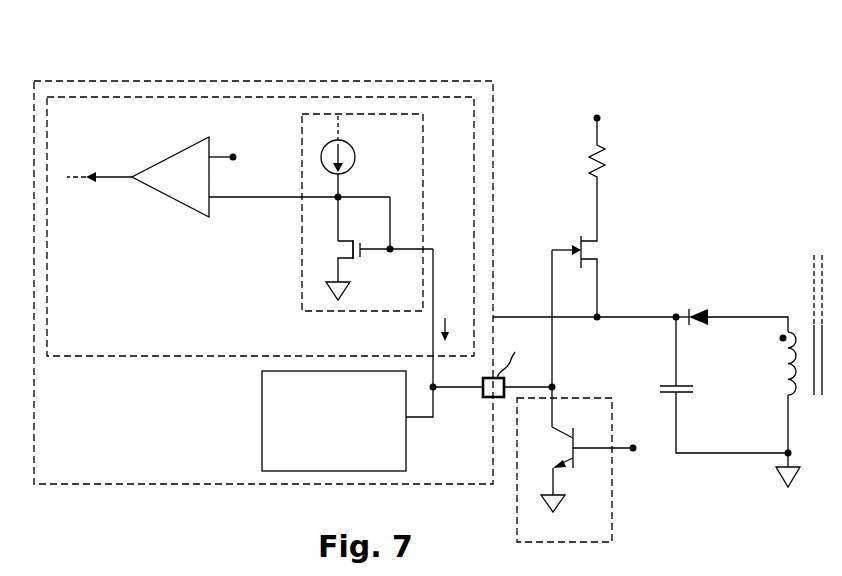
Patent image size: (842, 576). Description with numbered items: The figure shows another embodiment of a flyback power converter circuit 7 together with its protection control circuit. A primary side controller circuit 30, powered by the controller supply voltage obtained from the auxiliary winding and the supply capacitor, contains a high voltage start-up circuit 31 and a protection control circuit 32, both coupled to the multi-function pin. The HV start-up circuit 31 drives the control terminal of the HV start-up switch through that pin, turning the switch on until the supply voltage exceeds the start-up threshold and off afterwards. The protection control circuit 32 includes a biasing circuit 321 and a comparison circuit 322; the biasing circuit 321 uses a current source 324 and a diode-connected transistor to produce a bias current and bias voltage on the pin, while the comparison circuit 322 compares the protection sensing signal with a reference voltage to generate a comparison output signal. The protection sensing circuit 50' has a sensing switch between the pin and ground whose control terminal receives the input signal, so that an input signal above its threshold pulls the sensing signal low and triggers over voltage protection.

The flyback power converter circuit 7 is at (233, 48).
The primary side controller circuit 30 is at (480, 434).
The high voltage (HV) start-up circuit 31 is at (323, 462).
The protection control circuit 32 is at (142, 336).
The biasing circuit 321 is at (413, 302).
The comparison circuit 322 is at (228, 181).
The current source 324 is at (356, 153).
The protection sensing circuit 50' is at (578, 470).